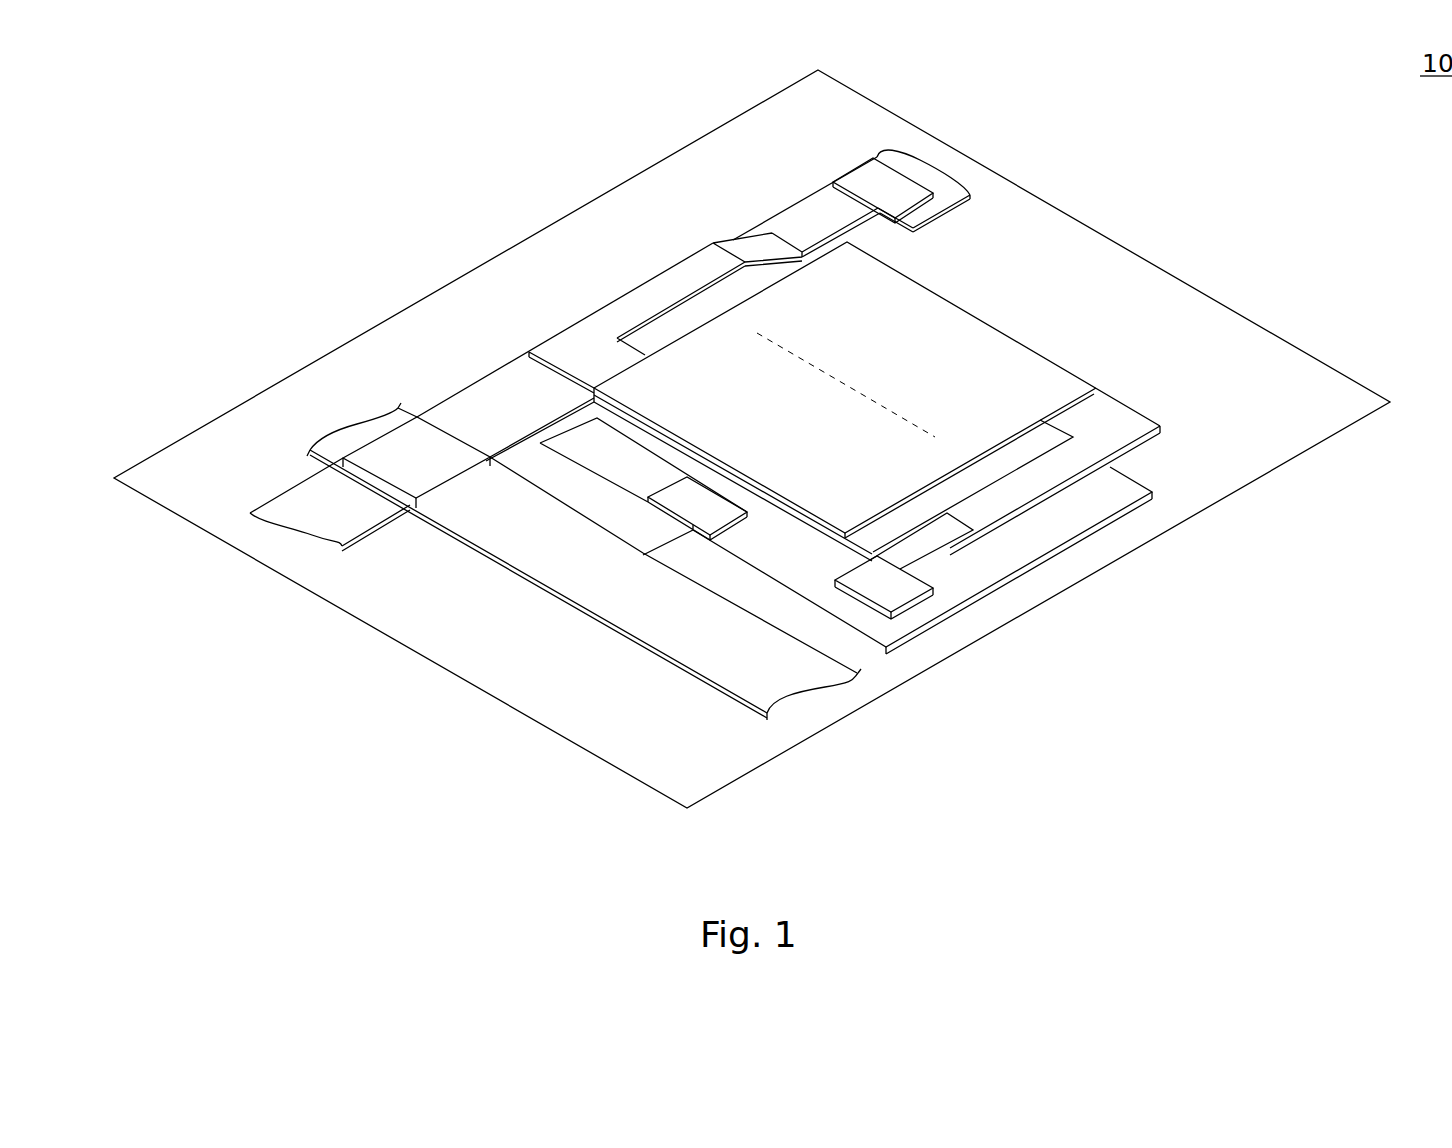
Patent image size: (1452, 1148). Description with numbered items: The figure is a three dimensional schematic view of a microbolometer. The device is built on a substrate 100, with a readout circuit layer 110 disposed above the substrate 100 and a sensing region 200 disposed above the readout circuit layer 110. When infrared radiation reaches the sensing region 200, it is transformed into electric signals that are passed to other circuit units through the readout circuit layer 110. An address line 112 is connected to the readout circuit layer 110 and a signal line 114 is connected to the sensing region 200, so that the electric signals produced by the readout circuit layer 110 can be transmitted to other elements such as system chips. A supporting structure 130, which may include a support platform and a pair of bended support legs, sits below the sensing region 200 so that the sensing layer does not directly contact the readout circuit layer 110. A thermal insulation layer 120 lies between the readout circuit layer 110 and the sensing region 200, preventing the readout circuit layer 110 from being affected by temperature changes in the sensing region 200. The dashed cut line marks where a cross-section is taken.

The substrate 100 is at (1273, 423).
The readout circuit layer 110 is at (1115, 492).
The address line 112 is at (523, 540).
The signal line 114 is at (497, 403).
The thermal insulation layer 120 is at (813, 538).
The supporting structure 130 is at (932, 553).
The sensing region 200 is at (1028, 370).